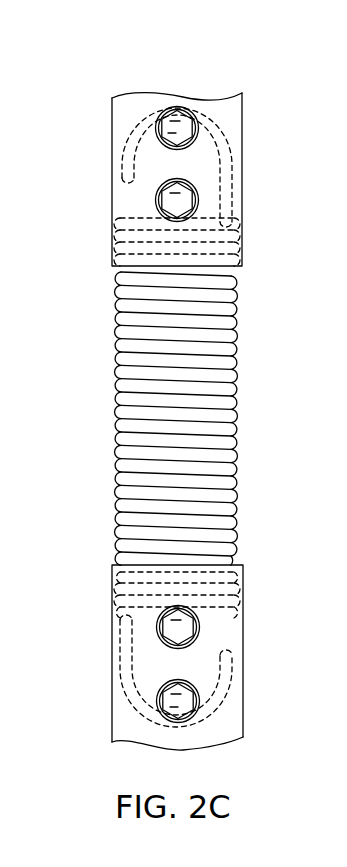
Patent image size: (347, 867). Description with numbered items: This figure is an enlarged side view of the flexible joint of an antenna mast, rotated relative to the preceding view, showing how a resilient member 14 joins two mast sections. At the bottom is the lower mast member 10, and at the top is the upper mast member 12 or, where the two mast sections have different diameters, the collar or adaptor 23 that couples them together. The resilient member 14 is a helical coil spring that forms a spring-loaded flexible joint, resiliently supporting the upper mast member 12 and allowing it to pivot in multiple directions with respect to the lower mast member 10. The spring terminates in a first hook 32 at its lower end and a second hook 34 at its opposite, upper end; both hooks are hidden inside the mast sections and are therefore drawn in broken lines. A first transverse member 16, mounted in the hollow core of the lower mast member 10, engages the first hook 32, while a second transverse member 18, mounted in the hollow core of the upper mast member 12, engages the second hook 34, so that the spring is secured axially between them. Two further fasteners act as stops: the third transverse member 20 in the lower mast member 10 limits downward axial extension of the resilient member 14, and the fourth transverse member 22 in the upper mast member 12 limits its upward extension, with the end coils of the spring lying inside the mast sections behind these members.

The lower mast member 10 is at (243, 730).
The upper mast member 12 is at (229, 154).
The adaptor 23 is at (243, 102).
The resilient member 14 is at (117, 404).
The first transverse member 16 is at (175, 698).
The second transverse member 18 is at (172, 135).
The third transverse member 20 is at (173, 623).
The fourth transverse member 22 is at (173, 205).
The first hook 32 is at (112, 668).
The second hook 34 is at (120, 148).